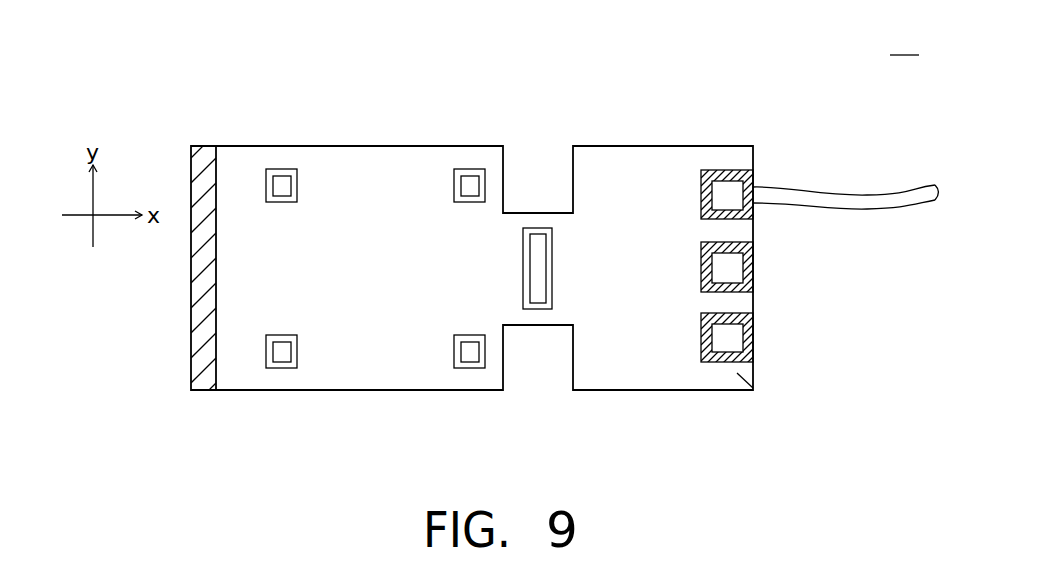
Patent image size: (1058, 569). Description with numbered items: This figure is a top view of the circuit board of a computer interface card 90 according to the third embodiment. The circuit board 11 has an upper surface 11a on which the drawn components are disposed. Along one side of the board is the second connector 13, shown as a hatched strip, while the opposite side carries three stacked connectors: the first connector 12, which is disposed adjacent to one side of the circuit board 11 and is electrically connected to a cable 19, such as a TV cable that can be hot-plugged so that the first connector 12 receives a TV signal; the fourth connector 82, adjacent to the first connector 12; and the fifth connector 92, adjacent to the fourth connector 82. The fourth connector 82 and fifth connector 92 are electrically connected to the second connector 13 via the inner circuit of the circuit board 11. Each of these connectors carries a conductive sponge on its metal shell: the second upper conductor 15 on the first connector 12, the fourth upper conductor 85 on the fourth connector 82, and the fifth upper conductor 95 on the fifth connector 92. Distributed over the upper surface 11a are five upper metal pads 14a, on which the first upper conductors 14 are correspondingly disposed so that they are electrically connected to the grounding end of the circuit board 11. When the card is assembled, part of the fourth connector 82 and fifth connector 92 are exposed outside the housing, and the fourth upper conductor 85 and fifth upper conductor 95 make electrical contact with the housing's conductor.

The computer interface card 90 is at (904, 43).
The circuit board 11 is at (730, 147).
The upper surface 11a is at (753, 388).
The first connector 12 is at (746, 174).
The second connector 13 is at (200, 162).
The first upper conductors 14 is at (280, 181).
The upper metal pads 14a is at (298, 185).
The second upper conductor 15 is at (720, 188).
The cable 19 is at (873, 198).
The fourth connector 82 is at (750, 243).
The fourth upper conductor 85 is at (733, 268).
The fifth connector 92 is at (748, 313).
The fifth upper conductor 95 is at (733, 338).